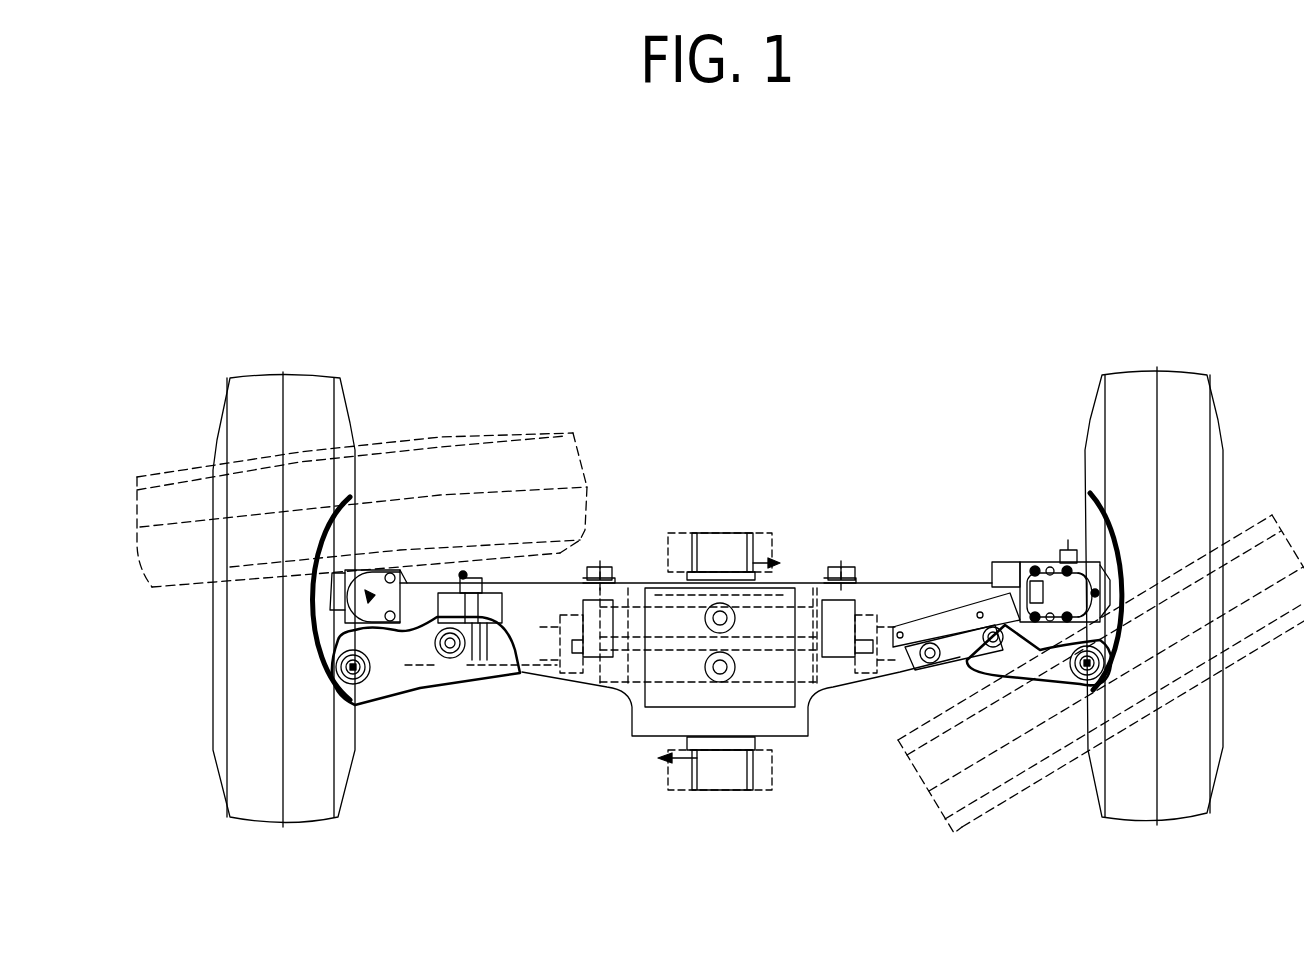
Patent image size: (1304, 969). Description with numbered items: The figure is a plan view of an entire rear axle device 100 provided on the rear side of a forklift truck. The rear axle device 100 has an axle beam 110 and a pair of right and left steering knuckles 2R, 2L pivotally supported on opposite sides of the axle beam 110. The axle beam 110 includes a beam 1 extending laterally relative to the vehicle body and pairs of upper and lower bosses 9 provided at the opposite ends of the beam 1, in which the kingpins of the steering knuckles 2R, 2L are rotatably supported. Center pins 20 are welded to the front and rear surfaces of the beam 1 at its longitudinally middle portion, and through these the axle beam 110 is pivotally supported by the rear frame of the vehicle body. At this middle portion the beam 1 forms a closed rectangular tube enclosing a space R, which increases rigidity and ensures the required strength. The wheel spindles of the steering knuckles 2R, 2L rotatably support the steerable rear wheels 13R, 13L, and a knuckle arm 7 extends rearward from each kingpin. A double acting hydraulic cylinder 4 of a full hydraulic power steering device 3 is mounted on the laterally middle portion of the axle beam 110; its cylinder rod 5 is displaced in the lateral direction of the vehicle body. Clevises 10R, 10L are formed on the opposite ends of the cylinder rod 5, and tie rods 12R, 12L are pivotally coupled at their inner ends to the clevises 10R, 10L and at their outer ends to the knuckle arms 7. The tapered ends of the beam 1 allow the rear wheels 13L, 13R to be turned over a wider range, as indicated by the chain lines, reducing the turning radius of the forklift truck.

The beam 1 is at (870, 582).
The left steering knuckle 2L is at (377, 547).
The right steering knuckle 2R is at (1048, 547).
The full hydraulic power steering device 3 is at (700, 612).
The double acting hydraulic cylinder 4 is at (638, 593).
The cylinder rod 5 is at (545, 640).
The knuckle arm 7 is at (337, 638).
The bosses 9 is at (403, 550).
The left clevis 10L is at (467, 660).
The right clevis 10R is at (967, 660).
The left tie rod 12L is at (397, 677).
The right tie rod 12R is at (1043, 677).
The left rear wheel 13L is at (298, 383).
The right rear wheel 13R is at (1123, 383).
The center pins 20 is at (730, 547).
The rear axle device 100 is at (917, 410).
The axle beam 110 is at (647, 750).
The space R is at (793, 737).